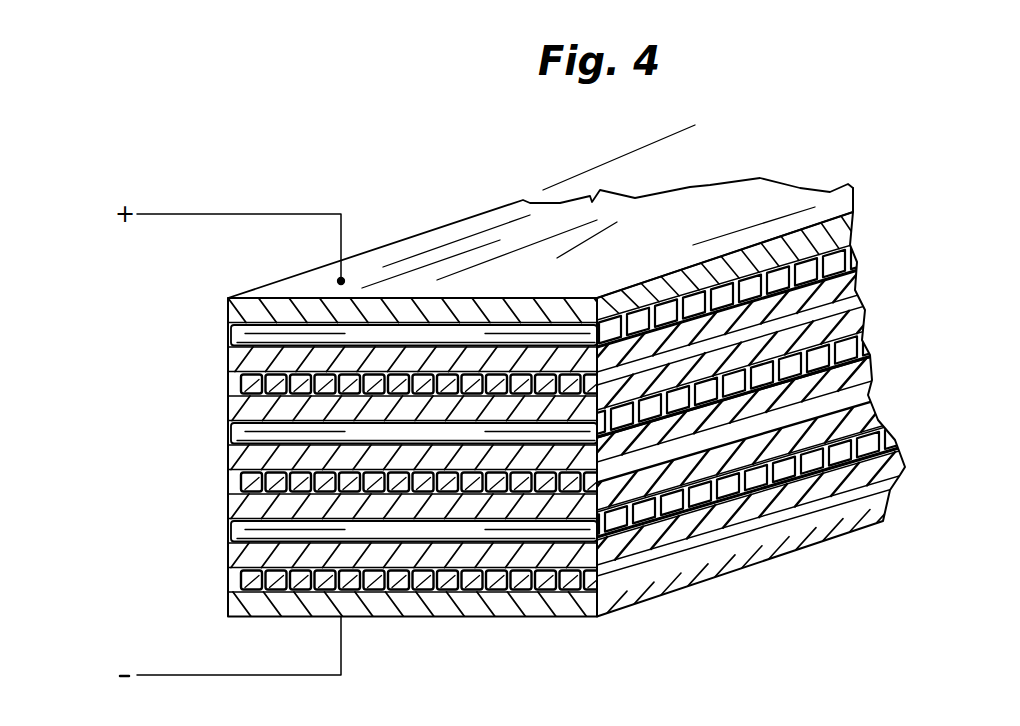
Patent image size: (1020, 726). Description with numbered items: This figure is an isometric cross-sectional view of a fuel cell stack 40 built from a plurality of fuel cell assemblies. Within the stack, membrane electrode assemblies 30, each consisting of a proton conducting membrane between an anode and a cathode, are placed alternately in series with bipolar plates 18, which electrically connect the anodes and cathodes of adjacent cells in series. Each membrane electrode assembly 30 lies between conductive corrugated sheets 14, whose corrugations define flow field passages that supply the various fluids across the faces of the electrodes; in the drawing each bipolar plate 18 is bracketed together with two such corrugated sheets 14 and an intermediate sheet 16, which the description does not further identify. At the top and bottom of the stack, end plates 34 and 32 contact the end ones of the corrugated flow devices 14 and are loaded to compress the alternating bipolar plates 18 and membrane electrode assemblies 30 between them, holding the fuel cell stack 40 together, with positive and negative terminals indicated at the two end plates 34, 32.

The conductive corrugated sheet 14 is at (228, 338).
The separator layer 16 is at (228, 412).
The bipolar plate 18 is at (167, 431).
The membrane electrode assembly 30 is at (228, 364).
The end plate 32 is at (242, 614).
The end plate 34 is at (243, 300).
The fuel cell stack 40 is at (738, 578).